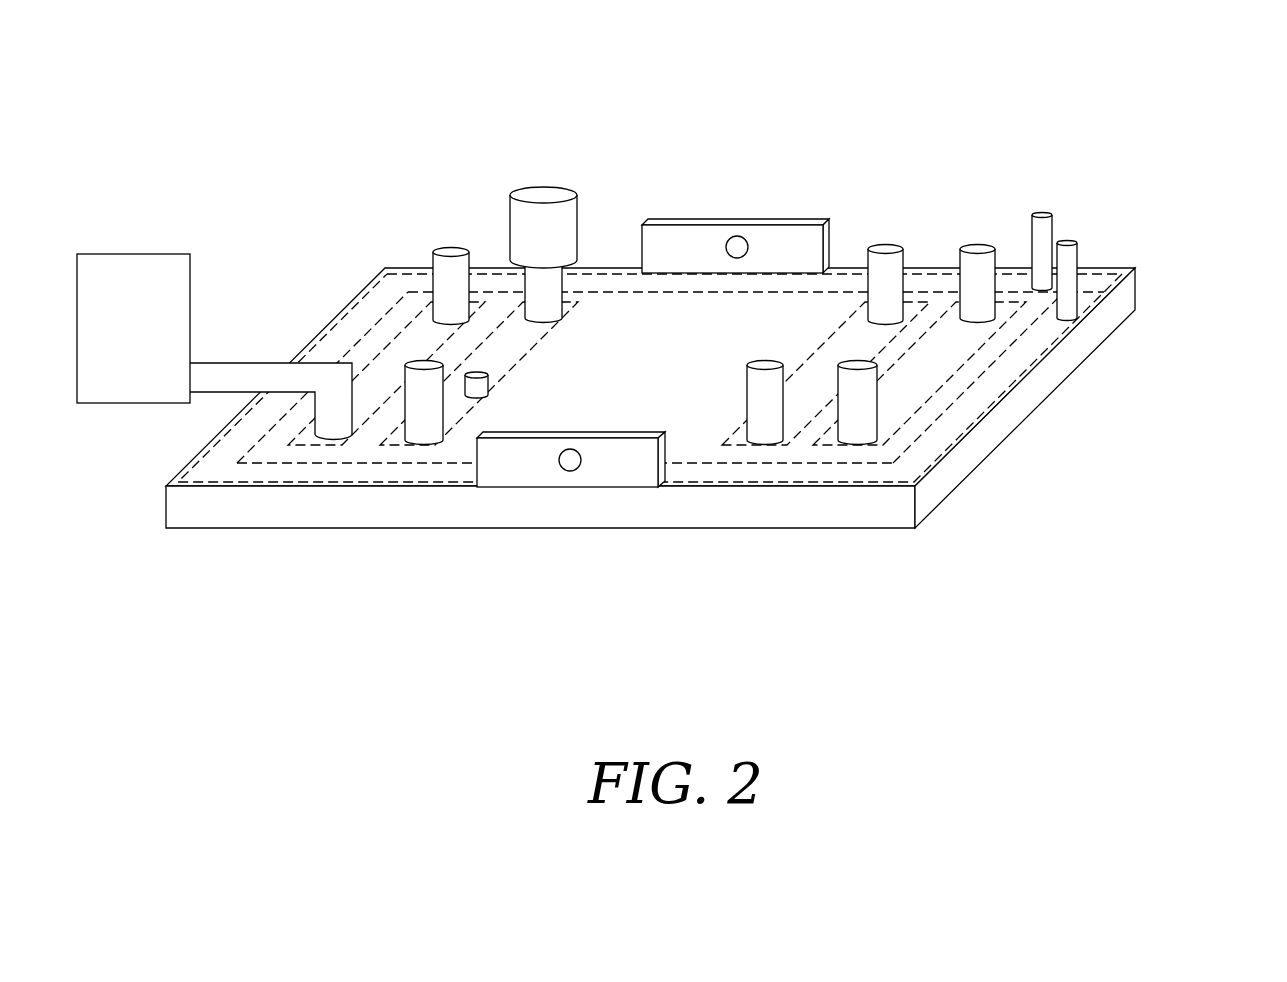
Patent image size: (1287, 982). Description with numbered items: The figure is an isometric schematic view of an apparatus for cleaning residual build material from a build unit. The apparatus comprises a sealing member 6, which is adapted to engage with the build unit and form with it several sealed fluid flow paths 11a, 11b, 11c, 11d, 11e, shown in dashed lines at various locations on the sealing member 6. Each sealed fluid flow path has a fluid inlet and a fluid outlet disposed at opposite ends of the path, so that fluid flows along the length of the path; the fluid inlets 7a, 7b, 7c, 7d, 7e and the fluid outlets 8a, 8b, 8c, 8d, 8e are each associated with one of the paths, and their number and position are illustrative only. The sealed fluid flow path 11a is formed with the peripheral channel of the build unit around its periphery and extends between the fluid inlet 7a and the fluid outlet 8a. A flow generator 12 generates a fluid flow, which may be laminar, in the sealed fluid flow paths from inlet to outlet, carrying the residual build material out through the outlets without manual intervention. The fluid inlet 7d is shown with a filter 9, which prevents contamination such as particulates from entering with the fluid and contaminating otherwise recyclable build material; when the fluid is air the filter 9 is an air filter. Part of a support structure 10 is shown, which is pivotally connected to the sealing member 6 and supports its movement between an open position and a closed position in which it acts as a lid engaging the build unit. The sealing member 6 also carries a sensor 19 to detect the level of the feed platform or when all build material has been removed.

The sealing member 6 is at (1130, 303).
The fluid inlet 7a is at (1042, 210).
The fluid inlet 7b is at (975, 243).
The fluid inlet 7c is at (885, 247).
The fluid inlet 7d is at (522, 282).
The fluid inlet 7e is at (448, 243).
The fluid outlet 8a is at (1067, 240).
The fluid outlet 8b is at (863, 447).
The fluid outlet 8c is at (768, 447).
The fluid outlet 8d is at (427, 447).
The fluid outlet 8e is at (338, 447).
The filter 9 is at (543, 183).
The support structure 10 is at (757, 214).
The sealed fluid flow path 11a is at (1023, 352).
The sealed fluid flow path 11b is at (932, 376).
The sealed fluid flow path 11c is at (832, 355).
The sealed fluid flow path 11d is at (527, 342).
The sealed fluid flow path 11e is at (408, 345).
The flow generator 12 is at (128, 252).
The sensor 19 is at (492, 384).